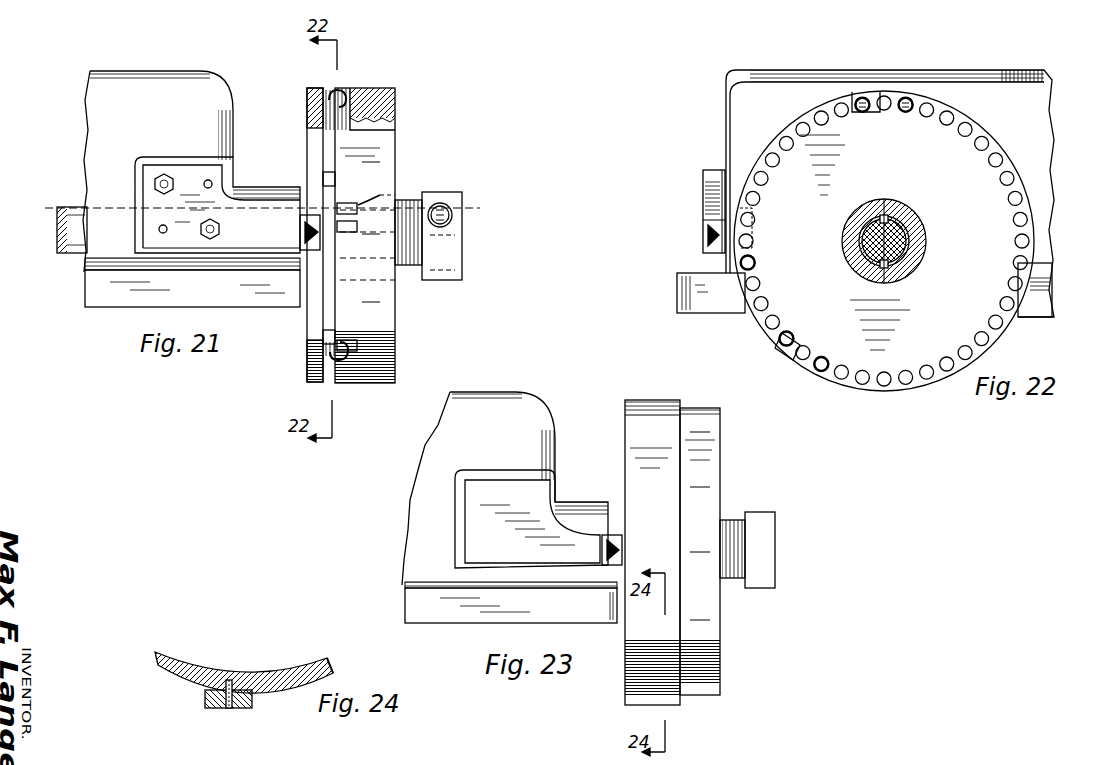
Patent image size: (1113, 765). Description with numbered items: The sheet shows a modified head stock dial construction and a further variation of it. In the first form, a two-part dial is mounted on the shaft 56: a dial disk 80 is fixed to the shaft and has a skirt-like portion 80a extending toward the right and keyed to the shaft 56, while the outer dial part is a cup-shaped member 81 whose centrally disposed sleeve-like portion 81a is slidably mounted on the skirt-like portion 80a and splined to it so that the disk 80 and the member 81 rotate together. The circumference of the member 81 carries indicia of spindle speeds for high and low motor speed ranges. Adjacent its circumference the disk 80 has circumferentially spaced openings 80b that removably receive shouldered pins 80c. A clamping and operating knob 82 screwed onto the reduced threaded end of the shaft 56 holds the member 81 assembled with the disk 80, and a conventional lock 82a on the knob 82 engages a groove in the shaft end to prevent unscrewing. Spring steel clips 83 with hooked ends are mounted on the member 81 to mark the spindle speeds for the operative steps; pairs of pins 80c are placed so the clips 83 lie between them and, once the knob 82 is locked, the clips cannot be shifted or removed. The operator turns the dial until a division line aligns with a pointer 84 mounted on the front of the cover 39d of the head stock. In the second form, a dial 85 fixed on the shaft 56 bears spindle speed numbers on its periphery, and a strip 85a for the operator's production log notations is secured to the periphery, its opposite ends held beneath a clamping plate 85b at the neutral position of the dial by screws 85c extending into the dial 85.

In FIG. 21, the cover 39d is at (202, 80).
In FIG. 22, the cover 39d is at (740, 128).
In FIG. 23, the cover 39d is at (515, 395).
In FIG. 21, the shaft 56 is at (58, 235).
In FIG. 22, the shaft 56 is at (922, 224).
In FIG. 21, the dial disk 80 is at (307, 160).
In FIG. 22, the dial disk 80 is at (996, 142).
In FIG. 21, the skirt-like portion 80a is at (395, 205).
In FIG. 22, the skirt-like portion 80a is at (915, 246).
In FIG. 22, the openings 80b is at (927, 103).
In FIG. 21, the shouldered pins 80c is at (323, 180).
In FIG. 22, the shouldered pins 80c is at (895, 128).
In FIG. 21, the cup-shaped member 81 is at (395, 118).
In FIG. 21, the sleeve-like portion 81a is at (360, 205).
In FIG. 22, the sleeve-like portion 81a is at (896, 202).
In FIG. 21, the clamping and operating knob 82 is at (442, 280).
In FIG. 23, the clamping and operating knob 82 is at (747, 550).
In FIG. 21, the lock 82a is at (444, 204).
In FIG. 21, the clips 83 is at (338, 90).
In FIG. 22, the clips 83 is at (866, 92).
In FIG. 21, the pointer 84 is at (227, 205).
In FIG. 22, the pointer 84 is at (703, 228).
In FIG. 23, the pointer 84 is at (600, 540).
In FIG. 23, the dial 85 is at (720, 450).
In FIG. 24, the dial 85 is at (278, 680).
In FIG. 23, the strip 85a is at (625, 415).
In FIG. 24, the strip 85a is at (330, 682).
In FIG. 24, the clamping plate 85b is at (250, 708).
In FIG. 24, the screws 85c is at (228, 706).